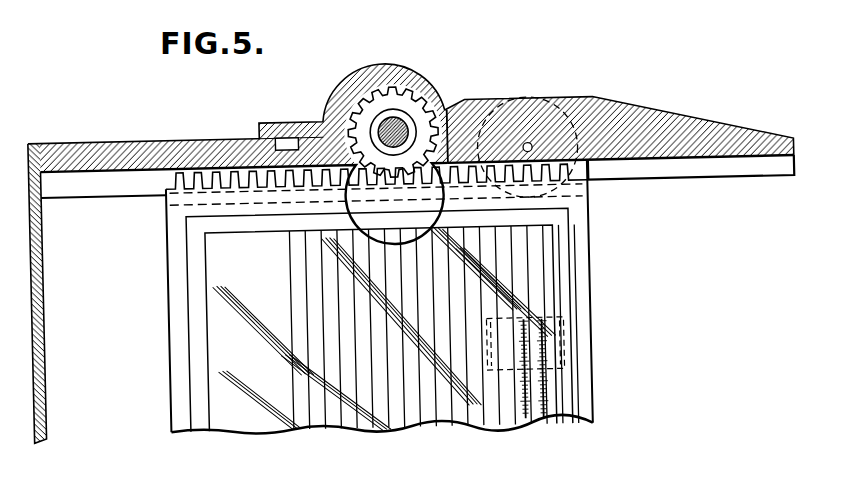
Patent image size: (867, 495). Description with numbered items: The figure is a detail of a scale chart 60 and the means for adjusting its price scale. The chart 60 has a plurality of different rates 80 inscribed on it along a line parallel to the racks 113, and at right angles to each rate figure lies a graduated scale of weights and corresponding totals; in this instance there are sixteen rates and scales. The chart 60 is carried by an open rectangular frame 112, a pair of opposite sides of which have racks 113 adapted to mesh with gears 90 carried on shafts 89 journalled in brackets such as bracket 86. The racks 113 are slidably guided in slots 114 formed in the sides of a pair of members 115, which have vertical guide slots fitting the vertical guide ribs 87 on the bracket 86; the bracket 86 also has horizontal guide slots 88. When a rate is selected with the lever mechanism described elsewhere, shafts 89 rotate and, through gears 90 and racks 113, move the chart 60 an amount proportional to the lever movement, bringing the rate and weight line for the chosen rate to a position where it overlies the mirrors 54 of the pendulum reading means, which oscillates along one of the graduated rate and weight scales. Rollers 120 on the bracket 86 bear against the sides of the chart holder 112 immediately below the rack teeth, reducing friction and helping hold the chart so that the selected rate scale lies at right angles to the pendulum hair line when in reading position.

The mirrors 54 is at (547, 345).
The scale chart 60 is at (352, 429).
The rates 80 is at (536, 245).
The bracket 86 is at (472, 111).
The vertical guide ribs 87 is at (294, 140).
The horizontal guide slots 88 is at (675, 179).
The shaft 89 is at (361, 104).
The gear 90 is at (389, 128).
The open rectangular frame 112 is at (179, 253).
The rack 113 is at (223, 173).
The slot 114 is at (121, 173).
The member 115 is at (94, 140).
The roller 120 is at (528, 103).